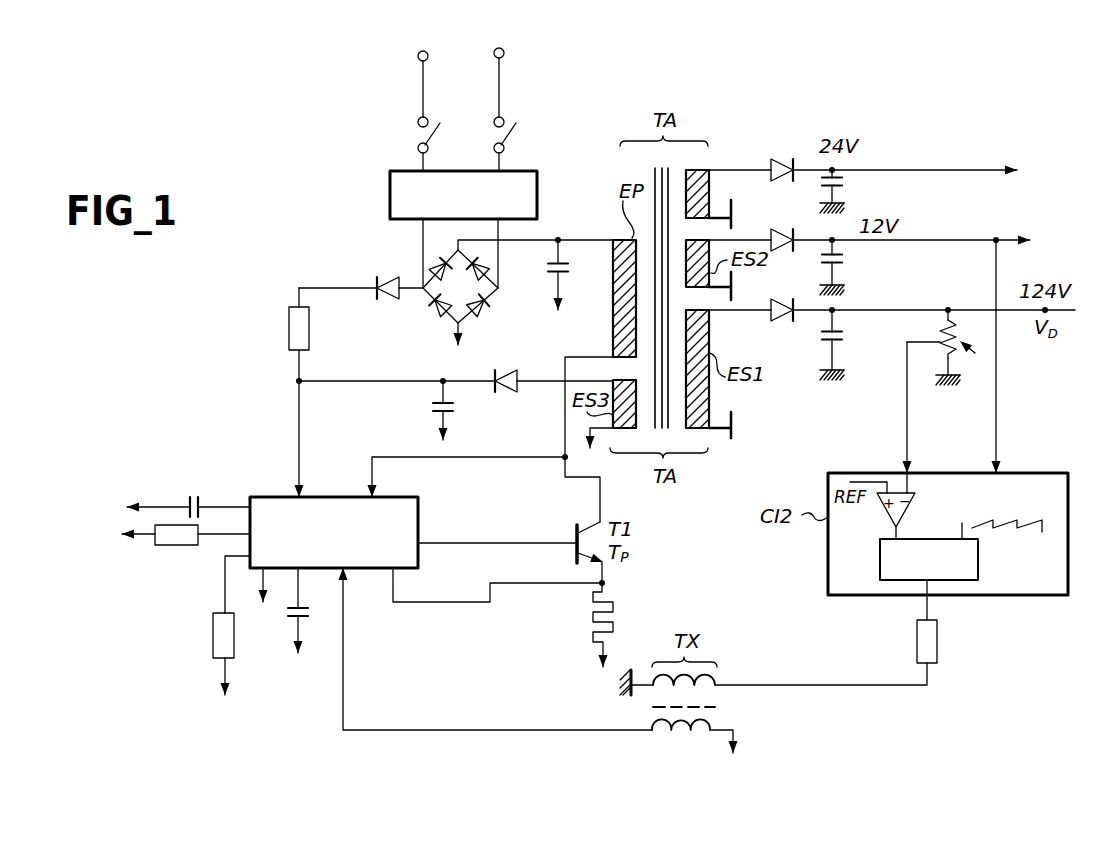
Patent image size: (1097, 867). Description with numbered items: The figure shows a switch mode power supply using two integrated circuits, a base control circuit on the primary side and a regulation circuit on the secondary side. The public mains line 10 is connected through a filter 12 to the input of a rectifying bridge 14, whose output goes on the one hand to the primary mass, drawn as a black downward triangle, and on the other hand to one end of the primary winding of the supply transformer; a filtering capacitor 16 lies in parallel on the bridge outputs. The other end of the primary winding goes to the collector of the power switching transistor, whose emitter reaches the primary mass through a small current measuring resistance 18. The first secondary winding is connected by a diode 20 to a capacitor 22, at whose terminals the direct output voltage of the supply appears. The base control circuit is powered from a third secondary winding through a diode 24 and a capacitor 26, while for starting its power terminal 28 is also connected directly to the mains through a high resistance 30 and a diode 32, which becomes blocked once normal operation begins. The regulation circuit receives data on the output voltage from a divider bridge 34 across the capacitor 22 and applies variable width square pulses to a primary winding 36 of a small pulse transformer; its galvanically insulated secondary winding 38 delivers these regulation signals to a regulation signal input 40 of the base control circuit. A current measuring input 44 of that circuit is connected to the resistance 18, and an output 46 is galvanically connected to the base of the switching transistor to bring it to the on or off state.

The line of the public electric distribution mains 10 is at (494, 51).
The filter 12 is at (389, 188).
The rectifying bridge 14 is at (406, 256).
The filtering capacitor 16 is at (565, 271).
The current measuring resistance 18 is at (614, 605).
The diode 20 is at (778, 301).
The capacitor 22 is at (822, 342).
The diode 24 is at (518, 372).
The capacitor 26 is at (437, 404).
The power terminal 28 is at (302, 494).
The high resistance 30 is at (288, 327).
The diode 32 is at (386, 297).
The divider bridge 34 is at (945, 391).
The primary winding 36 is at (716, 677).
The secondary winding 38 is at (661, 736).
The regulation signal input 40 is at (348, 572).
The current measuring input 44 is at (395, 578).
The output 46 is at (423, 543).